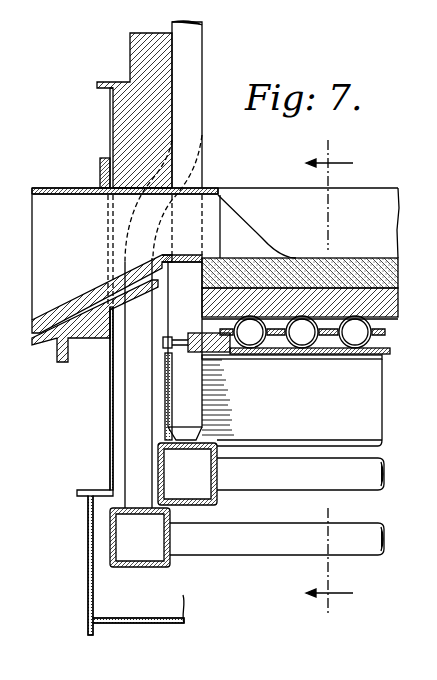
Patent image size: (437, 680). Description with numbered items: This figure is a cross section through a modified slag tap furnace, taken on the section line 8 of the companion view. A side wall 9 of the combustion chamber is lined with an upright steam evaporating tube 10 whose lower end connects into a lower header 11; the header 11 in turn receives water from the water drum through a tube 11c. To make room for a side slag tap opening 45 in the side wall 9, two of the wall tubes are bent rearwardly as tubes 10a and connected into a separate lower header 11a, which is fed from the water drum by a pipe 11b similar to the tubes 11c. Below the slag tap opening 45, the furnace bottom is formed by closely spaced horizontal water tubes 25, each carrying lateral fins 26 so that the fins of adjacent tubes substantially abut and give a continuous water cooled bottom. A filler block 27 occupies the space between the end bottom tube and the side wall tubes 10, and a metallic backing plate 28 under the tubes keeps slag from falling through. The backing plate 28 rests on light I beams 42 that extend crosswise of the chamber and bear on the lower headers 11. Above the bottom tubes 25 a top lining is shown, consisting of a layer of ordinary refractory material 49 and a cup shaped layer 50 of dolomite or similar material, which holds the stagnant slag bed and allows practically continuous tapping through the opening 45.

The section line 8 is at (339, 376).
The side wall 9 is at (157, 127).
The steam evaporating tube 10 is at (187, 77).
The bent tube 10a is at (132, 455).
The lower header 11 is at (218, 500).
The separate lower header 11a is at (148, 562).
The pipe 11b is at (250, 546).
The tube 11c is at (358, 480).
The water tube 25 is at (368, 342).
The fin 26 is at (270, 336).
The filler block 27 is at (218, 357).
The backing plate 28 is at (328, 352).
The I beam 42 is at (299, 402).
The side slag tap opening 45 is at (206, 192).
The refractory layer 49 is at (398, 305).
The dolomite layer 50 is at (398, 276).